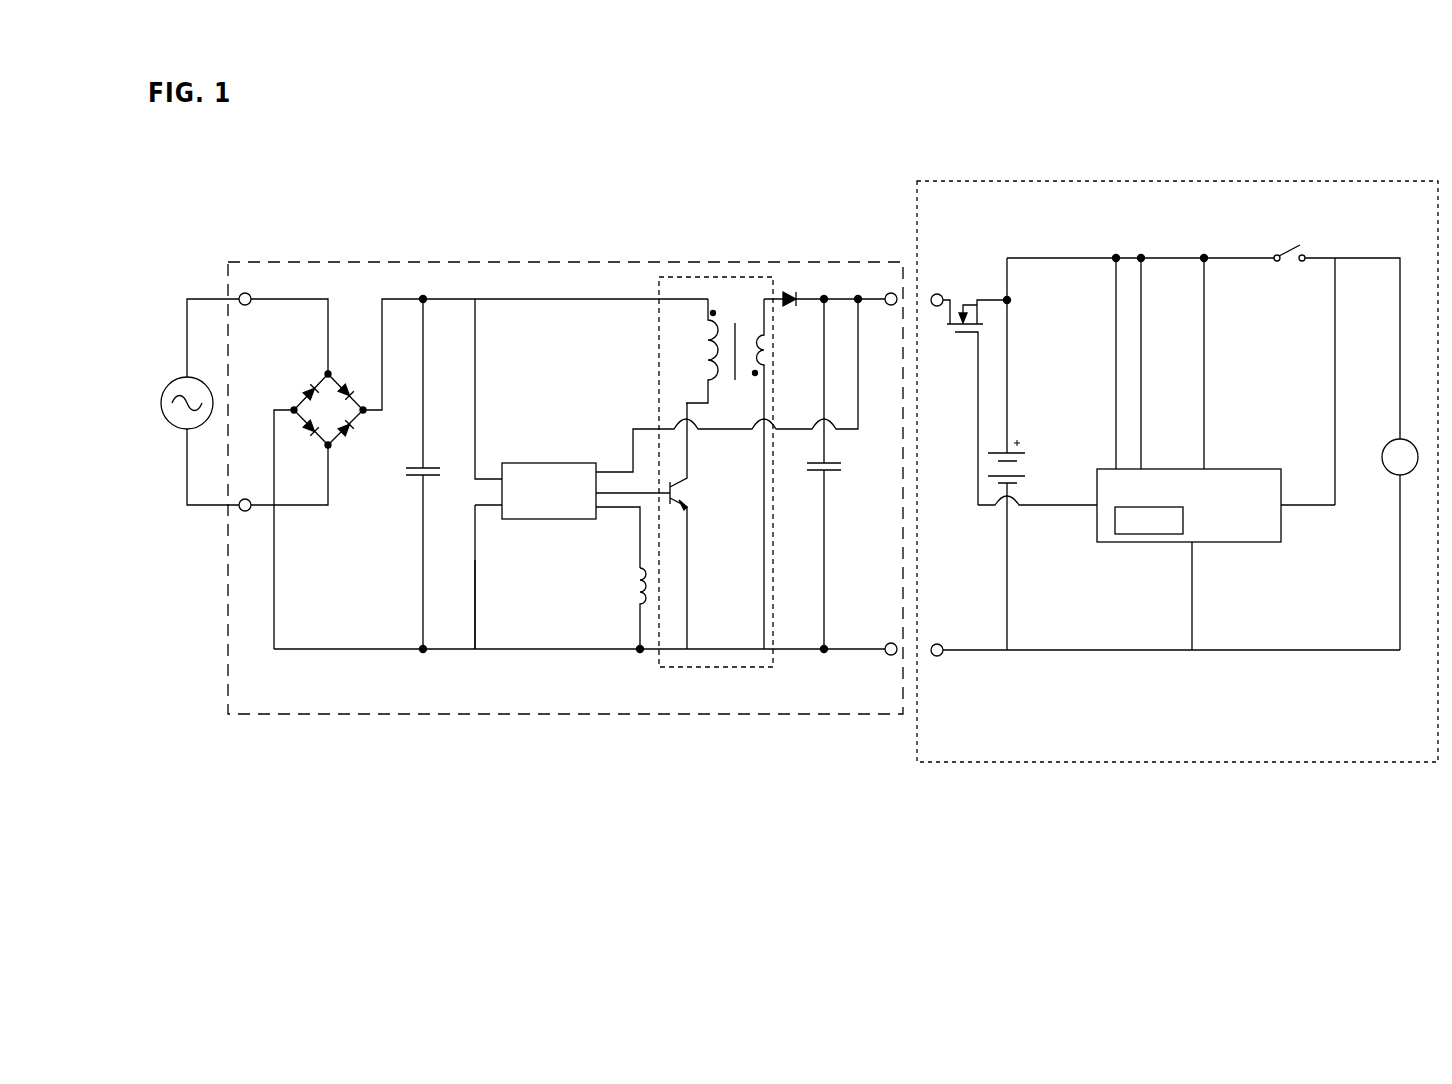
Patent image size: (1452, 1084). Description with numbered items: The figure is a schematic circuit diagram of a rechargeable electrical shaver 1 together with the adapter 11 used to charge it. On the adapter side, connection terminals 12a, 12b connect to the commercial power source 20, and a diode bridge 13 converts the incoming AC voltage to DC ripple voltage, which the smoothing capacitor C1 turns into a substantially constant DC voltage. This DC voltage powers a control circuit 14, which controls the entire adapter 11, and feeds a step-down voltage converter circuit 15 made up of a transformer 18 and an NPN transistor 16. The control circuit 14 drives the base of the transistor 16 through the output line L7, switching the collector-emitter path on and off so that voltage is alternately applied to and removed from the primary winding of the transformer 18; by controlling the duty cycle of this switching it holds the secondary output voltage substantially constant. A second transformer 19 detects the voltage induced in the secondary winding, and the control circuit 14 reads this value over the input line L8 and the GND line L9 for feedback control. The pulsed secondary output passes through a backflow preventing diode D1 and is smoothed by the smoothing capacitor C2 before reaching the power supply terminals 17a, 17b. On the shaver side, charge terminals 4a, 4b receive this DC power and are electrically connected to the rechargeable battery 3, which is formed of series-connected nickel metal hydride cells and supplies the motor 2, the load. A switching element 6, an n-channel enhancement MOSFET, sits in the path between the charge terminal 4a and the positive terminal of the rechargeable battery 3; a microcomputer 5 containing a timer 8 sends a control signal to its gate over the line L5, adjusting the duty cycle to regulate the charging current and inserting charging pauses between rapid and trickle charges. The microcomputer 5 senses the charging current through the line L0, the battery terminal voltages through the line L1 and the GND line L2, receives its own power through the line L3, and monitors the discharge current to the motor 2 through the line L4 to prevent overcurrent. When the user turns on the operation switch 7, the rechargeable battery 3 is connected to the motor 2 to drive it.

The electrical shaver 1 is at (1115, 181).
The motor 2 is at (1418, 440).
The rechargeable battery 3 is at (1020, 427).
The charge terminal 4a is at (937, 294).
The charge terminal 4b is at (936, 658).
The microcomputer 5 is at (1189, 494).
The switching element 6 is at (977, 393).
The operation switch 7 is at (1290, 272).
The timer 8 is at (1127, 535).
The adapter 11 is at (473, 262).
The connection terminal 12a is at (250, 296).
The connection terminal 12b is at (245, 512).
The diode bridge 13 is at (479, 474).
The control circuit 14 is at (666, 474).
The step-down voltage converter circuit 15 is at (707, 668).
The transistor 16 is at (700, 526).
The power supply terminal 17a is at (886, 296).
The power supply terminal 17b is at (890, 657).
The transformer 18 is at (725, 467).
The transformer 19 is at (622, 610).
The commercial power source 20 is at (171, 384).
The smoothing capacitor C1 is at (436, 474).
The smoothing capacitor C2 is at (836, 476).
The backflow preventing diode D1 is at (824, 289).
The line L0 is at (1204, 350).
The line L1 is at (1141, 352).
The GND line L2 is at (1193, 606).
The line L3 is at (1116, 323).
The line L4 is at (1335, 298).
The line L5 is at (1038, 508).
The output line L7 is at (648, 496).
The input line L8 is at (640, 543).
The GND line L9 is at (476, 590).